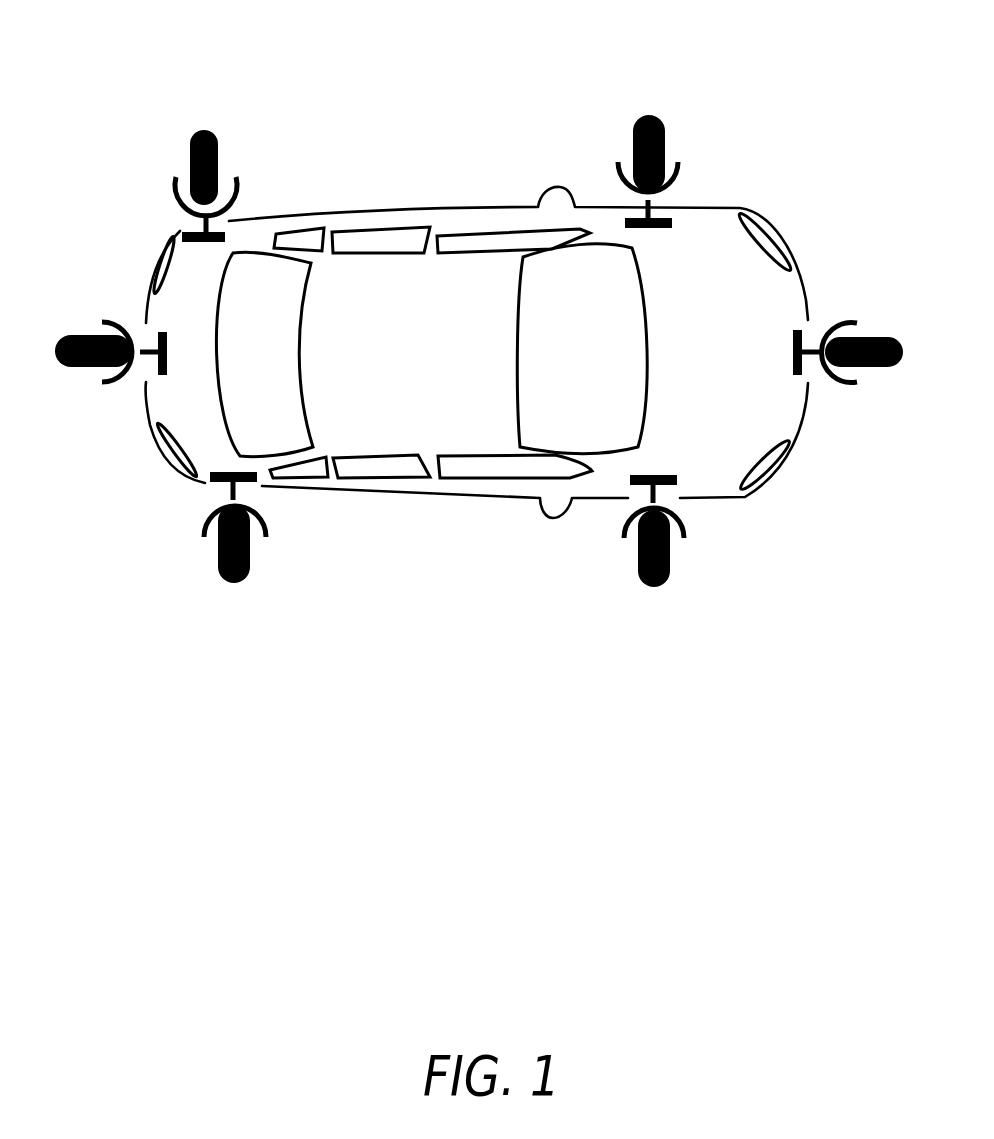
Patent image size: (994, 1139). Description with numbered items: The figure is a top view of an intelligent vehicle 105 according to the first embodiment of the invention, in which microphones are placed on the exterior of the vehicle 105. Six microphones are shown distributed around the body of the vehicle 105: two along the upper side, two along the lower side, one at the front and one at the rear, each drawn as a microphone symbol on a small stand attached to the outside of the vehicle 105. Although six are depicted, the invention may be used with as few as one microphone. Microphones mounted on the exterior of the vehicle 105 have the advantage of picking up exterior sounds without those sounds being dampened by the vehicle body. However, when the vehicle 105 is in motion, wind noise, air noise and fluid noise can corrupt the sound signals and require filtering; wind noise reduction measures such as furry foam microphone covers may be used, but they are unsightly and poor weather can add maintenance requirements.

The vehicle 105 is at (405, 207).